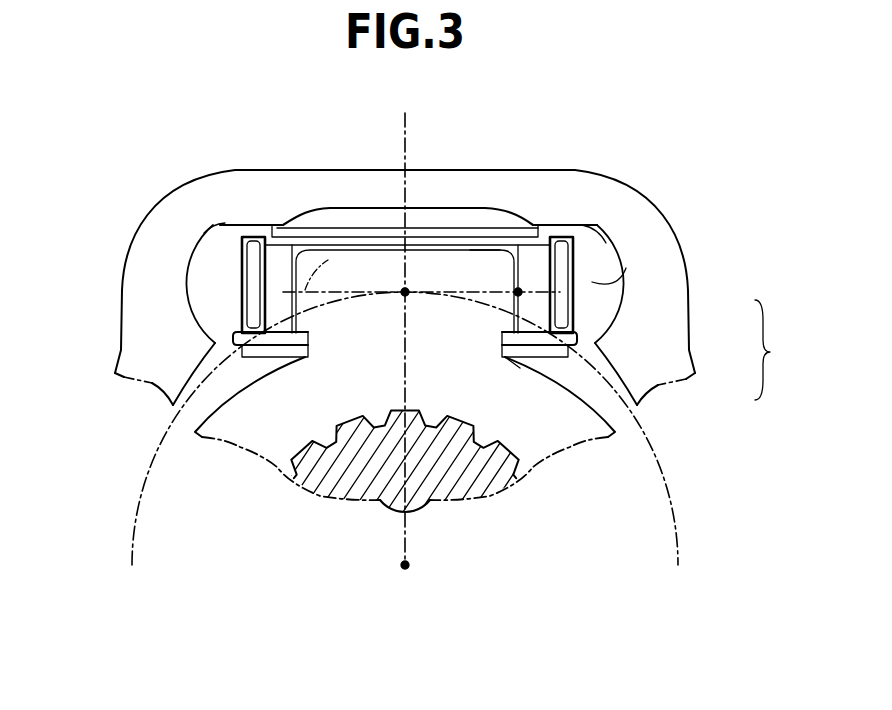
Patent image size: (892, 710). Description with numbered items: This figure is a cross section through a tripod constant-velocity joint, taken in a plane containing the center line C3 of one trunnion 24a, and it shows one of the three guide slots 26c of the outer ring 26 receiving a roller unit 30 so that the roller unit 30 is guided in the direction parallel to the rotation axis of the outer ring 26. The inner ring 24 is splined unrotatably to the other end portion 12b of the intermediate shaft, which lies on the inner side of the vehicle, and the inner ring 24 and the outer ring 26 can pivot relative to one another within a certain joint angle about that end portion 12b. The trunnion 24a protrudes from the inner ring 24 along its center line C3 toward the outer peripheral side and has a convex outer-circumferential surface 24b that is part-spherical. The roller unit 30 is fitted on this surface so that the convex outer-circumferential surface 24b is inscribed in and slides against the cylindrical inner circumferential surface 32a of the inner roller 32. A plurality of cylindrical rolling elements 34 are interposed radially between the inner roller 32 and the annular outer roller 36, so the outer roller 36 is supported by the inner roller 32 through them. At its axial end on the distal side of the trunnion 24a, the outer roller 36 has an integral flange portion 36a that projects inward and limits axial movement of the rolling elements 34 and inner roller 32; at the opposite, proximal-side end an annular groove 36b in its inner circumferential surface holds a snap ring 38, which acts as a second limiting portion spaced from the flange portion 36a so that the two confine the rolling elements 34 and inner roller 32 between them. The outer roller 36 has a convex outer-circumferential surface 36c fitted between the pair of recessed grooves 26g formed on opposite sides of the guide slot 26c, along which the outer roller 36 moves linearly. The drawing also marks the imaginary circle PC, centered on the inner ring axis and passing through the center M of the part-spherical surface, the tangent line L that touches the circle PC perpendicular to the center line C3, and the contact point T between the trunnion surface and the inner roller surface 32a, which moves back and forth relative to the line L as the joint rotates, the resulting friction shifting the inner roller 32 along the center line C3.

The outer ring 26 is at (210, 120).
The guide slot 26c is at (473, 208).
The recessed groove 26g is at (612, 245).
The inner ring 24 is at (234, 465).
The trunnion 24a is at (353, 254).
The convex outer-circumferential surface 24b is at (510, 354).
The roller unit 30 is at (777, 350).
The inner roller 32 is at (560, 328).
The cylindrical inner circumferential surface 32a is at (497, 250).
The cylindrical rolling elements 34 is at (560, 312).
The outer roller 36 is at (604, 296).
The flange portion 36a is at (551, 226).
The annular groove 36b is at (556, 346).
The convex outer-circumferential surface 36c is at (603, 270).
The snap ring 38 is at (575, 352).
The other end portion of the intermediate shaft 12b is at (474, 485).
The center line of the trunnion C3 is at (405, 113).
The imaginary circle PC is at (148, 470).
The center of the part-spherical surface M is at (405, 292).
The contact or tangent point T is at (518, 292).
The tangent line L is at (321, 272).